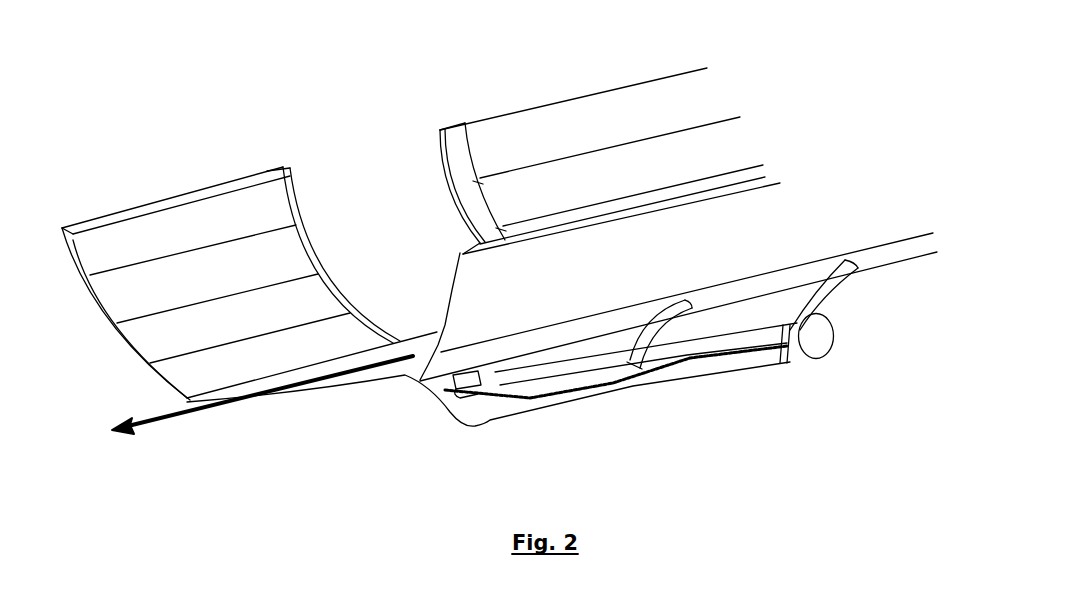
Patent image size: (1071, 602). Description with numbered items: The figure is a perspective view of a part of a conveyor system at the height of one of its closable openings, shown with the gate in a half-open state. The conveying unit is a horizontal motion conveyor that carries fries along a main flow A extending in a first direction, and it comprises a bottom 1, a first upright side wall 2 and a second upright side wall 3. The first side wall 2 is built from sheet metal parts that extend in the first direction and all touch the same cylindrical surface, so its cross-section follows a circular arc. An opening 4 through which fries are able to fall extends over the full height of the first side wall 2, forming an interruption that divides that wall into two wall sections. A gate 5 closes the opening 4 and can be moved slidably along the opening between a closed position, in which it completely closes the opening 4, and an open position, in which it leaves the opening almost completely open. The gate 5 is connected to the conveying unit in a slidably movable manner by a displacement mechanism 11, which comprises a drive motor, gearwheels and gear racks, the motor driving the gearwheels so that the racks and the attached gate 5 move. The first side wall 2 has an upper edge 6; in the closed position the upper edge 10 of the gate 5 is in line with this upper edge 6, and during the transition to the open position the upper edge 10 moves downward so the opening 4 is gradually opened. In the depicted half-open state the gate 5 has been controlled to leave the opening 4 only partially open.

The bottom 1 is at (403, 367).
The first upright side wall 2 is at (137, 292).
The second upright side wall 3 is at (605, 268).
The opening 4 is at (348, 228).
The gate 5 is at (412, 303).
The upper edge of the first side wall 6 is at (152, 208).
The upper edge of the gate 10 is at (395, 282).
The displacement mechanism 11 is at (479, 386).
The main flow A is at (195, 413).